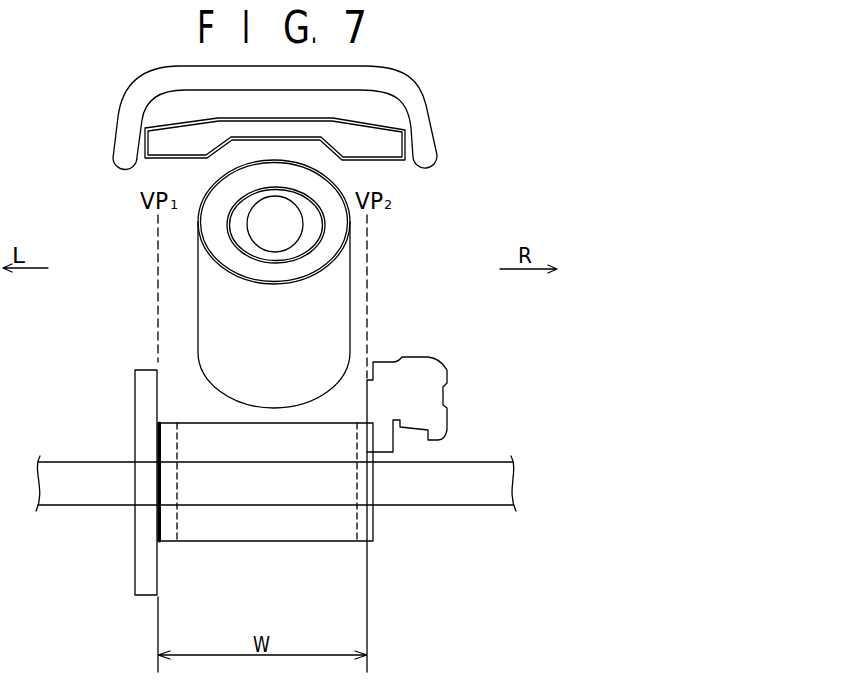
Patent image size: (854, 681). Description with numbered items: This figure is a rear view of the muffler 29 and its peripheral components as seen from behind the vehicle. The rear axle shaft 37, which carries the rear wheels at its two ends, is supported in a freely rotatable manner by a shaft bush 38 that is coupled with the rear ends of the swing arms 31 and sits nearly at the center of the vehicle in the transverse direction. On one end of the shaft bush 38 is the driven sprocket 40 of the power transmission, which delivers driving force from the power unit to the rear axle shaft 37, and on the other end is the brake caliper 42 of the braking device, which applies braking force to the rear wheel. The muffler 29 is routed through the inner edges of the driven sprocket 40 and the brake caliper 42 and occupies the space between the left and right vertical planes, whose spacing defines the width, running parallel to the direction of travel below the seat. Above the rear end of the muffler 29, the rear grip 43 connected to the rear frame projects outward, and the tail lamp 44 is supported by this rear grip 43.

The muffler 29 is at (286, 338).
The swing arm 31 is at (175, 518).
The rear axle shaft 37 is at (90, 460).
The shaft bush 38 is at (262, 542).
The driven sprocket 40 is at (137, 560).
The brake caliper 42 is at (432, 373).
The rear grip 43 is at (420, 99).
The tail lamp 44 is at (405, 143).